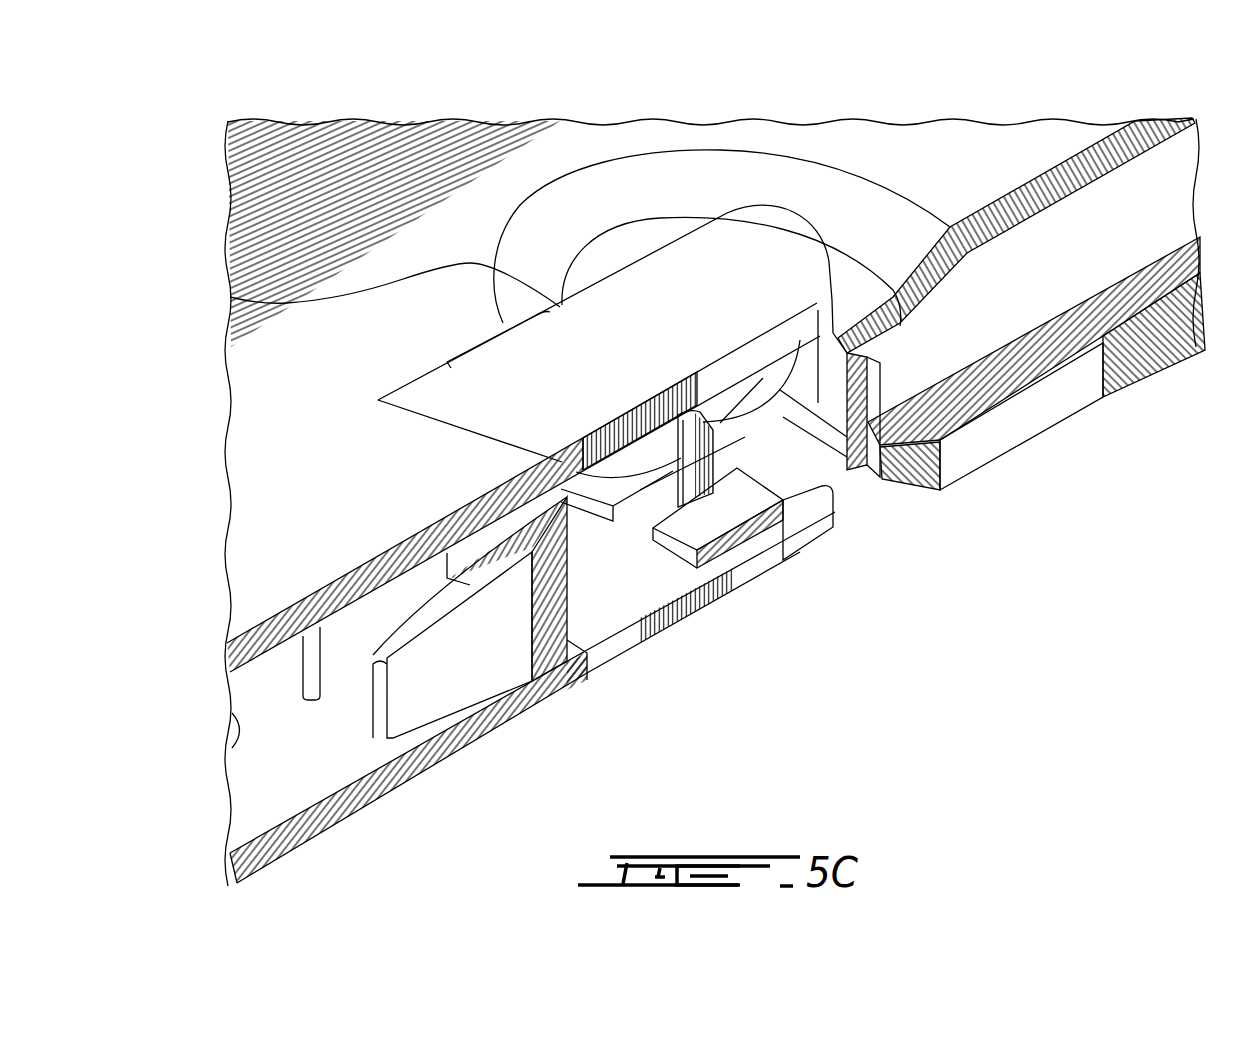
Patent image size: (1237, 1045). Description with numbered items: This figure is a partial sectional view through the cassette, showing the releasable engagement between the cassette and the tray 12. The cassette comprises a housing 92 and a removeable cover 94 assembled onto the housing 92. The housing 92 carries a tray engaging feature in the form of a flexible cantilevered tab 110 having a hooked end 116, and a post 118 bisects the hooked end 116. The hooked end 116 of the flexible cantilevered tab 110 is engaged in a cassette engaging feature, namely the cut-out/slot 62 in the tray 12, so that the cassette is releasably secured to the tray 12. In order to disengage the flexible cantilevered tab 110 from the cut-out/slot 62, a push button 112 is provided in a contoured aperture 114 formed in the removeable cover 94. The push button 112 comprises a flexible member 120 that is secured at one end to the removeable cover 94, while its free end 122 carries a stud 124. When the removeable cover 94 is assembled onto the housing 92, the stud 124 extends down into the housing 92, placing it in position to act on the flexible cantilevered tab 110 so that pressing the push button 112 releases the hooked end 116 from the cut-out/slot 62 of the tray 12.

The tray 12 is at (1097, 397).
The cut-out/slot 62 is at (833, 473).
The housing 92 is at (515, 705).
The removeable cover 94 is at (420, 547).
The flexible cantilevered tab 110 is at (690, 598).
The push button 112 is at (287, 303).
The contoured aperture 114 is at (870, 197).
The hooked end 116 is at (790, 535).
The post 118 is at (385, 403).
The flexible member 120 is at (652, 307).
The free end 122 is at (782, 242).
The stud 124 is at (935, 437).